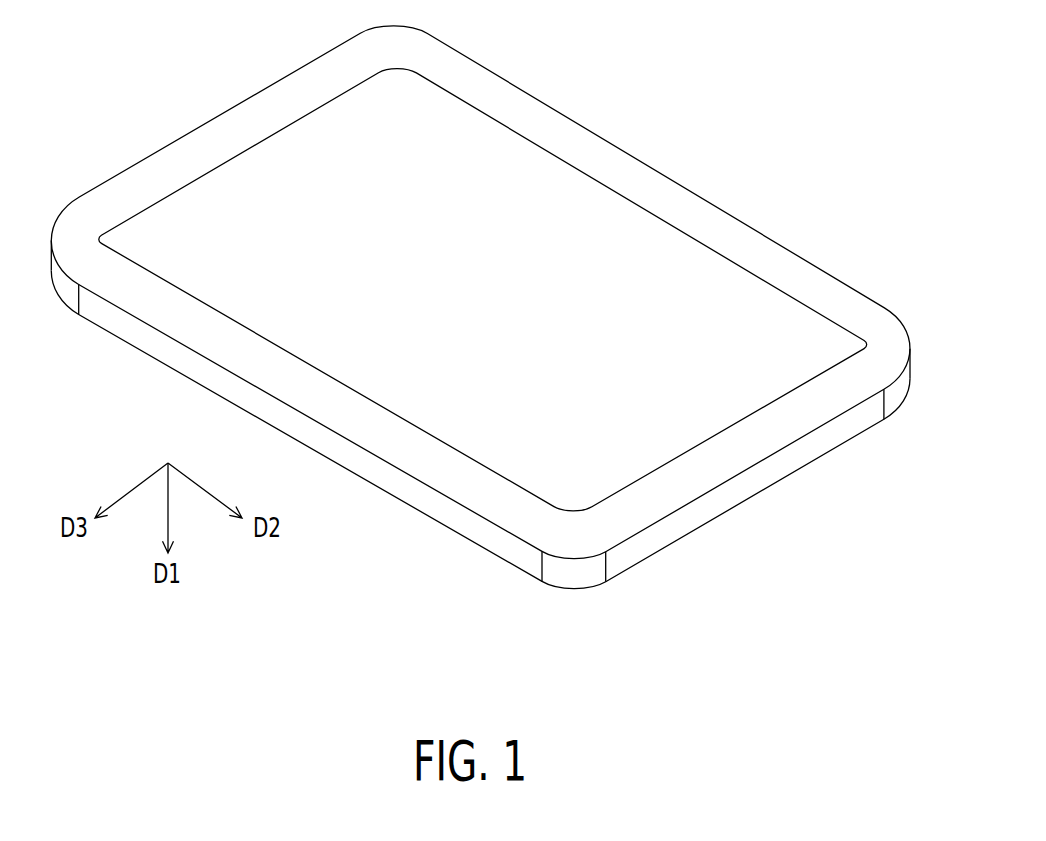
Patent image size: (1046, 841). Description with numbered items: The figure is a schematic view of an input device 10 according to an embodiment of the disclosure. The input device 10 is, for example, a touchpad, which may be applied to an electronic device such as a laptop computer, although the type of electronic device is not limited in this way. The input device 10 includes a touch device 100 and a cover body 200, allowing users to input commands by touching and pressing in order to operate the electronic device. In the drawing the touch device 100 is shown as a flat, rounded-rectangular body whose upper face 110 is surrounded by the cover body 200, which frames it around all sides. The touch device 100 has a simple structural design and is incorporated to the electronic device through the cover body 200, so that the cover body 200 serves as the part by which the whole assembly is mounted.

The input device 10 is at (498, 308).
The touch device 100 is at (480, 415).
The display panel 110 is at (728, 293).
The cover body 200 is at (538, 122).